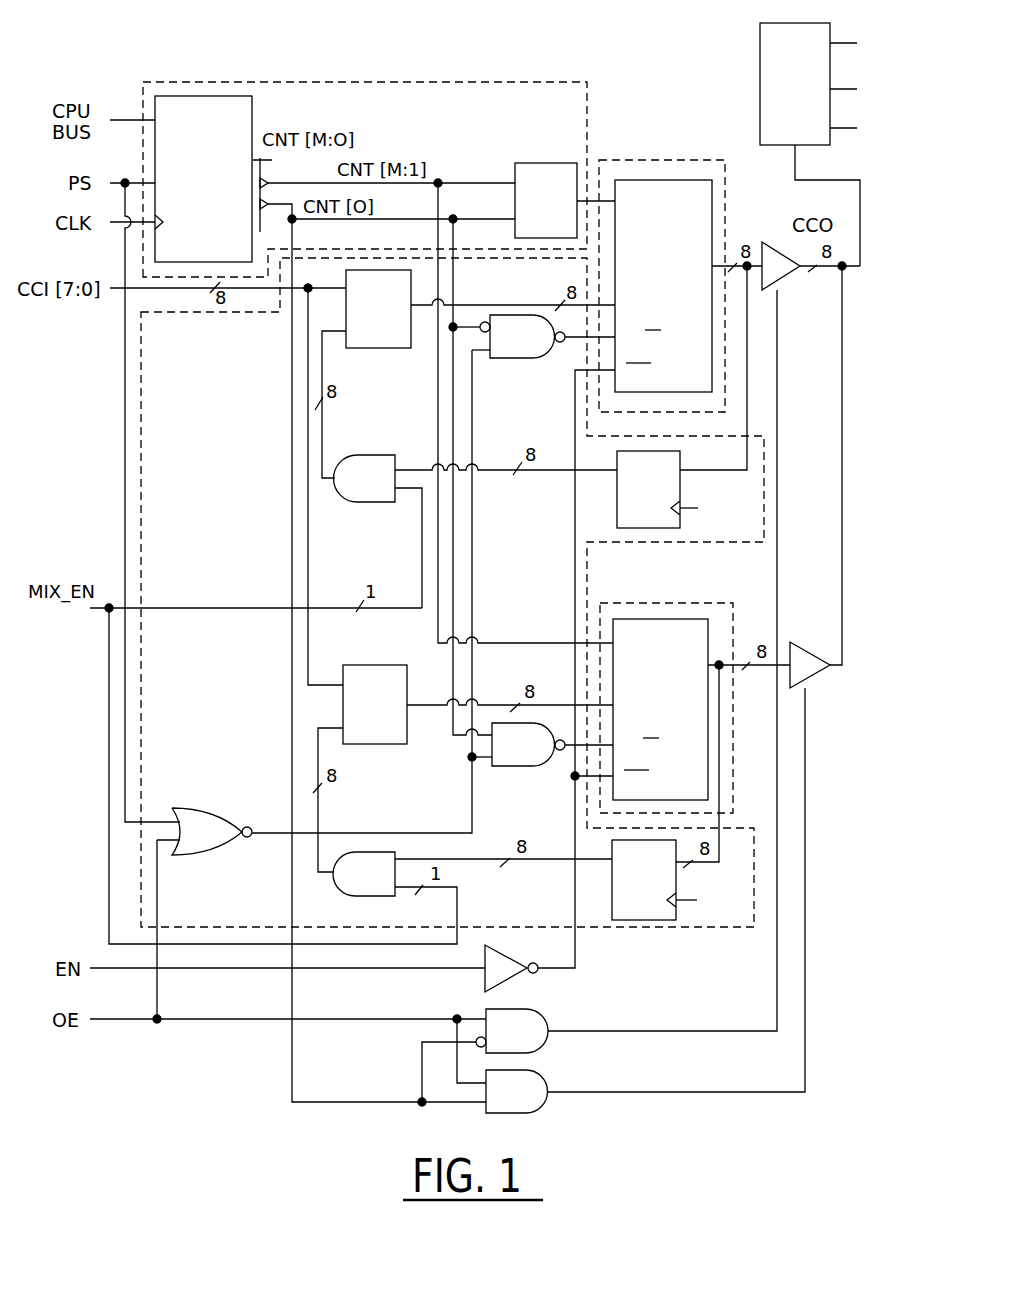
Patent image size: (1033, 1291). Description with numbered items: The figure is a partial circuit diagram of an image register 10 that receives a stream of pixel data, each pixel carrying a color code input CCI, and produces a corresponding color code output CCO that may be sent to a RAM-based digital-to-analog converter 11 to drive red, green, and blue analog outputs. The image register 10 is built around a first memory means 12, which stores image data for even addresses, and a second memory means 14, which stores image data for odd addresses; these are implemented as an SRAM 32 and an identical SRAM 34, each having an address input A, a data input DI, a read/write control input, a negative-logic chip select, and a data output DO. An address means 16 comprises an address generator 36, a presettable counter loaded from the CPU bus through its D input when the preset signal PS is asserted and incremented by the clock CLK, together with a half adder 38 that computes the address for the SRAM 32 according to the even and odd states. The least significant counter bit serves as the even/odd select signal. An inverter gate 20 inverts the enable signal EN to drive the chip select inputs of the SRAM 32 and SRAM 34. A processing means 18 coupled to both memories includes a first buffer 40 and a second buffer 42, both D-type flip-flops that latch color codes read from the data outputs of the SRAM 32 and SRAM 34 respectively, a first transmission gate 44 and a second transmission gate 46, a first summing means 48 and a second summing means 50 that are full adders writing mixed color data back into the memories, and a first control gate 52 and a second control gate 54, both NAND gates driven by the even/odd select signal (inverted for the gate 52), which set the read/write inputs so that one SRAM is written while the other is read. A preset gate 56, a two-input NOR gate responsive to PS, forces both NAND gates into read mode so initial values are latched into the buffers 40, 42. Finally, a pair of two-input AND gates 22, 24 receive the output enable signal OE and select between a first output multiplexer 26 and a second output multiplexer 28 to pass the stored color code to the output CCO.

The image register 10 is at (690, 72).
The RAM based digital-to-analog converter 11 is at (760, 62).
The first memory means 12 is at (660, 160).
The second memory means 14 is at (688, 603).
The address means 16 is at (350, 82).
The processing means 18 is at (140, 333).
The inverter gate 20 is at (516, 959).
The AND gate 22 is at (548, 1023).
The AND gate 24 is at (548, 1081).
The first output multiplexer 26 is at (772, 244).
The second output multiplexer 28 is at (792, 651).
The static random access memory 32 is at (712, 202).
The SRAM device 34 is at (698, 789).
The address generator 36 is at (253, 117).
The half adder 38 is at (521, 163).
The first buffer 40 is at (617, 478).
The second buffer 42 is at (612, 878).
The first transmission gate 44 is at (379, 455).
The second transmission gate 46 is at (352, 896).
The first summing means 48 is at (401, 348).
The second summing means 50 is at (392, 656).
The first control gate 52 is at (524, 358).
The second control gate 54 is at (525, 766).
The preset gate 56 is at (206, 808).